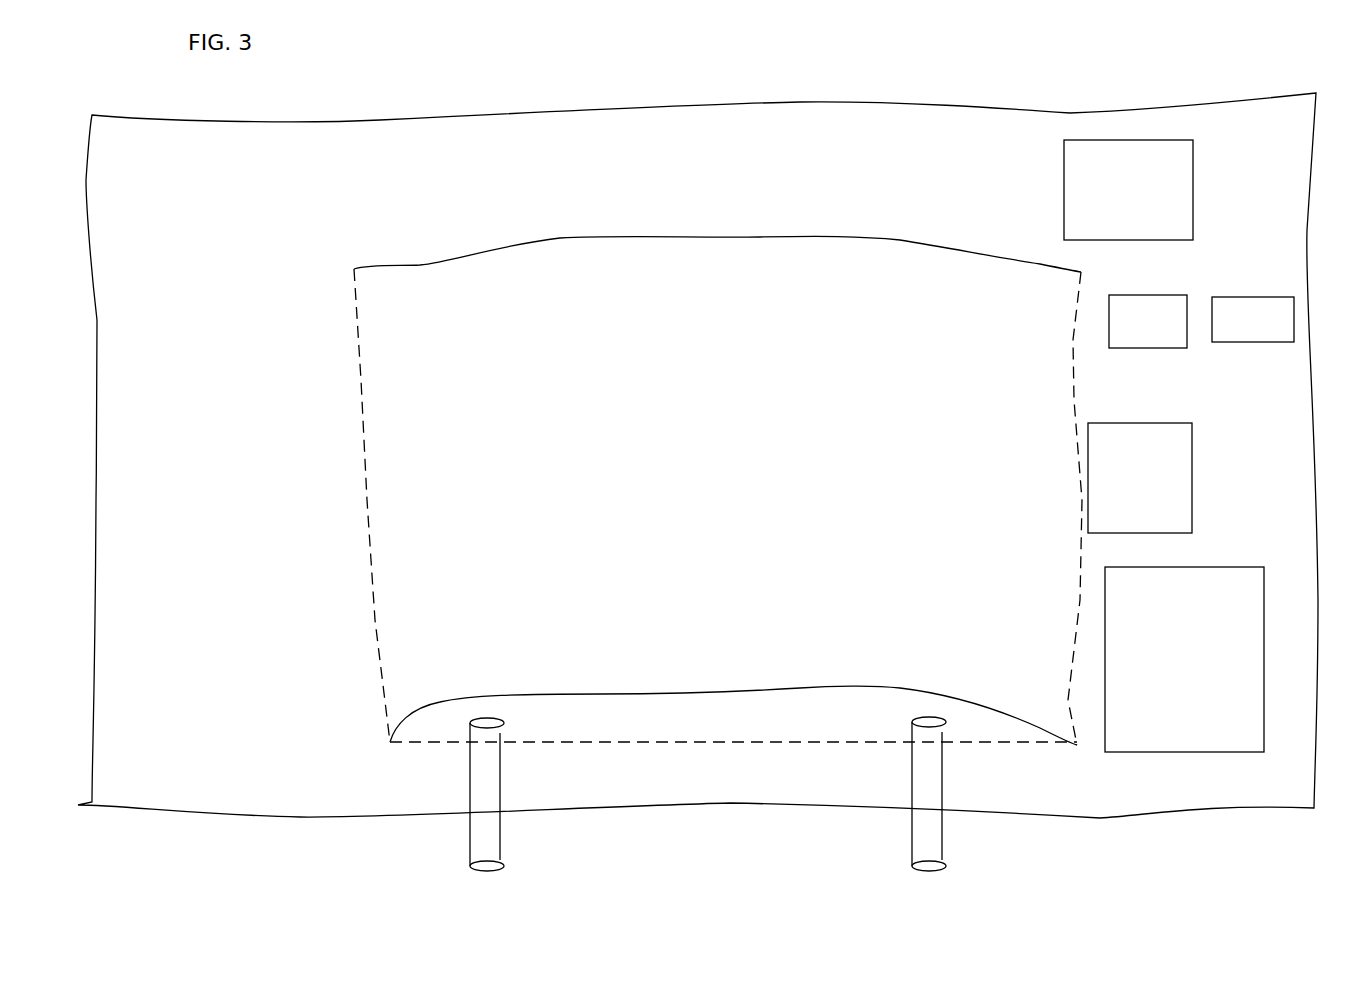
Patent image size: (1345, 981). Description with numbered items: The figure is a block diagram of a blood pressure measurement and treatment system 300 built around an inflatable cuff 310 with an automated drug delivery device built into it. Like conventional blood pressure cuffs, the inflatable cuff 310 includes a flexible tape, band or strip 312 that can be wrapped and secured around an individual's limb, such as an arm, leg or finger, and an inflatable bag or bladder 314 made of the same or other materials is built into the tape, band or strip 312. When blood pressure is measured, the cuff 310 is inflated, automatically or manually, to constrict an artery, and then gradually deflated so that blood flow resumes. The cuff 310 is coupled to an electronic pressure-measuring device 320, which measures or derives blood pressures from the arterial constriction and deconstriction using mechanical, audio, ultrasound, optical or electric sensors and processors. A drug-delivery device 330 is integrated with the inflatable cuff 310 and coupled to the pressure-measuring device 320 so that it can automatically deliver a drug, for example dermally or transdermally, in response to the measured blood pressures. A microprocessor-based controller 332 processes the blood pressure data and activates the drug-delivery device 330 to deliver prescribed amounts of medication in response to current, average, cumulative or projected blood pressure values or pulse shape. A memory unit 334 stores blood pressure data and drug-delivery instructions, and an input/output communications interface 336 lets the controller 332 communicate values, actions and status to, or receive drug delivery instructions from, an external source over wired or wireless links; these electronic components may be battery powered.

The blood pressure measurement and treatment system 300 is at (240, 81).
The inflatable cuff 310 is at (168, 161).
The flexible tape, band or strip 312 is at (218, 716).
The inflatable bag or bladder 314 is at (554, 364).
The pressure-measuring device 320 is at (1161, 489).
The drug-delivery device 330 is at (1206, 670).
The controller 332 is at (1149, 200).
The memory unit 334 is at (1169, 331).
The input/output communications interface 336 is at (1274, 329).